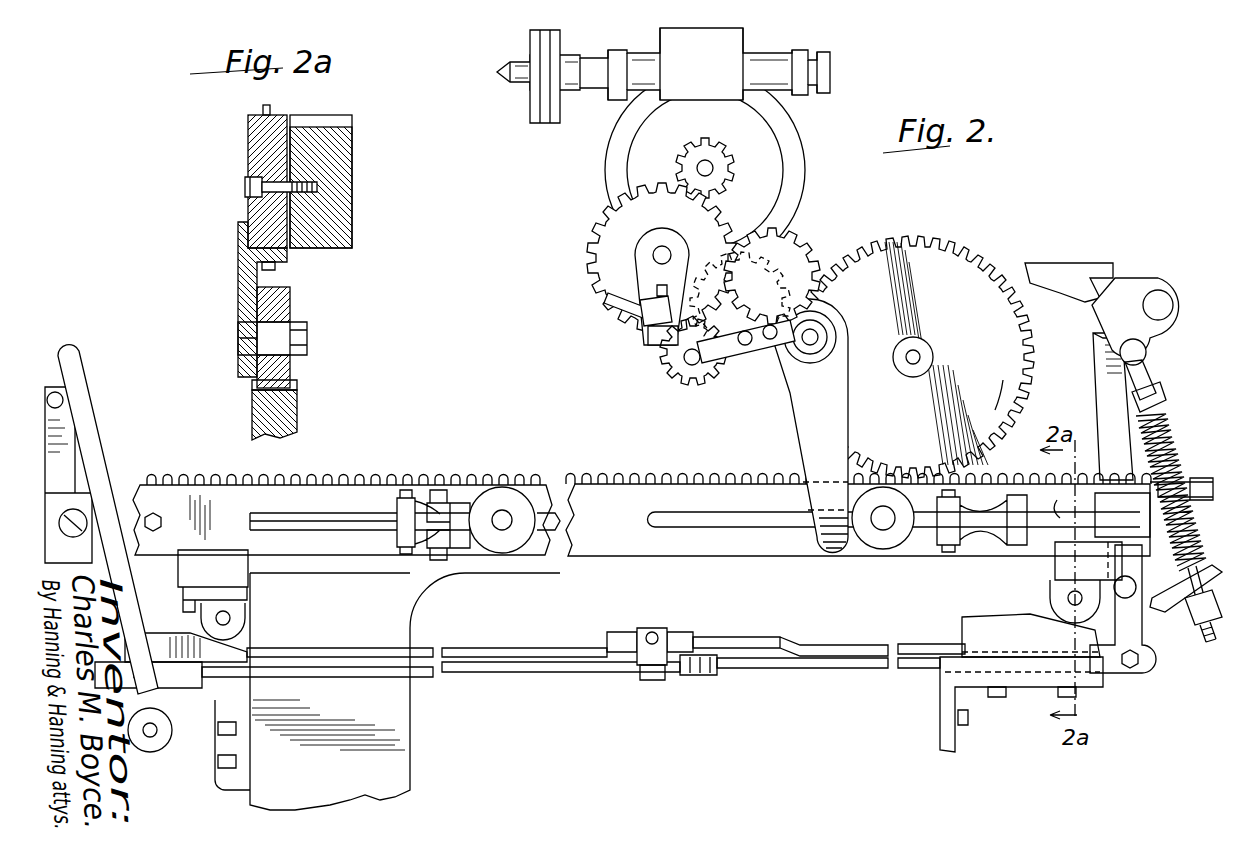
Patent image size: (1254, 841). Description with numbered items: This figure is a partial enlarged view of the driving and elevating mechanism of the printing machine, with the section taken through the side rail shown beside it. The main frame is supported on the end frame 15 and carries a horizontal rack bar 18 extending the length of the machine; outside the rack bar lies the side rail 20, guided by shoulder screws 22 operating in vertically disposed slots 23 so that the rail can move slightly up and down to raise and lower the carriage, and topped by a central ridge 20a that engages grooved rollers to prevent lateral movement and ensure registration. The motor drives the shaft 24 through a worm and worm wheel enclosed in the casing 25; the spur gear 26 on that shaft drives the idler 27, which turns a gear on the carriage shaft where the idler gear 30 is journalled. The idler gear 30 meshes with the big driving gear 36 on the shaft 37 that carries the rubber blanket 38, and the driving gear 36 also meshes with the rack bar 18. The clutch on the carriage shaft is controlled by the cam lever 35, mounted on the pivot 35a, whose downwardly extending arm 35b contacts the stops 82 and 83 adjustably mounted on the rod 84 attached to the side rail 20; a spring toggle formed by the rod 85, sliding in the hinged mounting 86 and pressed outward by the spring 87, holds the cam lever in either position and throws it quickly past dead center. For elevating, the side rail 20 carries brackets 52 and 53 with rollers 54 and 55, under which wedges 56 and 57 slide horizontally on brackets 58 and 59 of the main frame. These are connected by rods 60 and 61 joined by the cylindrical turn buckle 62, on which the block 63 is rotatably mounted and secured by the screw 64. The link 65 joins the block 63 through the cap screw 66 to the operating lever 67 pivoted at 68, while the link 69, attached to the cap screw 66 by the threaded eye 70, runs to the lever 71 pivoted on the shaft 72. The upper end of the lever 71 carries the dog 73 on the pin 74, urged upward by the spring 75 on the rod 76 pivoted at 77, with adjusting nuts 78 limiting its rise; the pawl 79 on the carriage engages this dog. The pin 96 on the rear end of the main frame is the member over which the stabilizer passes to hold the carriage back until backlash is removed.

In FIG. 2, the end frame 15 is at (387, 765).
In FIG. 2, the rack bar 18 is at (465, 480).
In FIG. 2A, the rack bar 18 is at (337, 168).
In FIG. 2, the side rail 20 is at (740, 550).
In FIG. 2A, the side rail 20 is at (248, 145).
In FIG. 2A, the central ridge 20a is at (270, 107).
In FIG. 2, the shoulder screw 22 is at (1057, 500).
In FIG. 2A, the shoulder screw 22 is at (245, 195).
In FIG. 2A, the vertically disposed slot 23 is at (245, 182).
In FIG. 2, the shaft 24 is at (713, 168).
In FIG. 2, the casing 25 is at (770, 185).
In FIG. 2, the spur gear 26 is at (803, 210).
In FIG. 2, the idler 27 is at (590, 241).
In FIG. 2, the idler gear 30 is at (785, 252).
In FIG. 2, the cam lever 35 is at (815, 380).
In FIG. 2, the pivot 35a is at (822, 332).
In FIG. 2, the downwardly extending arm 35b is at (832, 555).
In FIG. 2, the big driving gear 36 is at (1003, 373).
In FIG. 2, the shaft 37 is at (920, 357).
In FIG. 2, the rubber blanket 38 is at (973, 253).
In FIG. 2, the bracket 52 is at (180, 575).
In FIG. 2, the bracket 53 is at (1057, 565).
In FIG. 2A, the bracket 53 is at (238, 270).
In FIG. 2, the roller 54 is at (247, 628).
In FIG. 2, the roller 55 is at (1050, 598).
In FIG. 2A, the roller 55 is at (290, 305).
In FIG. 2, the wedge 56 is at (167, 635).
In FIG. 2, the wedge 57 is at (985, 620).
In FIG. 2A, the wedge 57 is at (297, 415).
In FIG. 2, the bracket 58 is at (220, 697).
In FIG. 2, the bracket 59 is at (940, 690).
In FIG. 2, the rod 60 is at (428, 645).
In FIG. 2, the rod 61 is at (785, 637).
In FIG. 2, the turn buckle 62 is at (688, 634).
In FIG. 2, the block 63 is at (642, 628).
In FIG. 2, the screw 64 is at (655, 633).
In FIG. 2, the link 65 is at (430, 677).
In FIG. 2, the cap screw 66 is at (652, 680).
In FIG. 2, the operating lever 67 is at (96, 443).
In FIG. 2, the pivot 68 is at (150, 740).
In FIG. 2, the link 69 is at (820, 668).
In FIG. 2, the threaded eye 70 is at (695, 677).
In FIG. 2, the lever 71 is at (1100, 392).
In FIG. 2, the shaft 72 is at (1135, 597).
In FIG. 2, the dog 73 is at (1125, 292).
In FIG. 2, the pin 74 is at (1160, 305).
In FIG. 2, the spring 75 is at (1168, 455).
In FIG. 2, the rod 76 is at (1152, 386).
In FIG. 2, the pivot 77 is at (1148, 352).
In FIG. 2, the adjusting nuts 78 is at (1190, 622).
In FIG. 2, the pawl 79 is at (1068, 268).
In FIG. 2, the stop 82 is at (508, 495).
In FIG. 2, the stop 83 is at (890, 550).
In FIG. 2, the rod 84 is at (520, 548).
In FIG. 2, the toggle rod 85 is at (615, 304).
In FIG. 2, the hinged mounting 86 is at (650, 332).
In FIG. 2, the spring 87 is at (660, 366).
In FIG. 2, the pin 96 is at (62, 400).